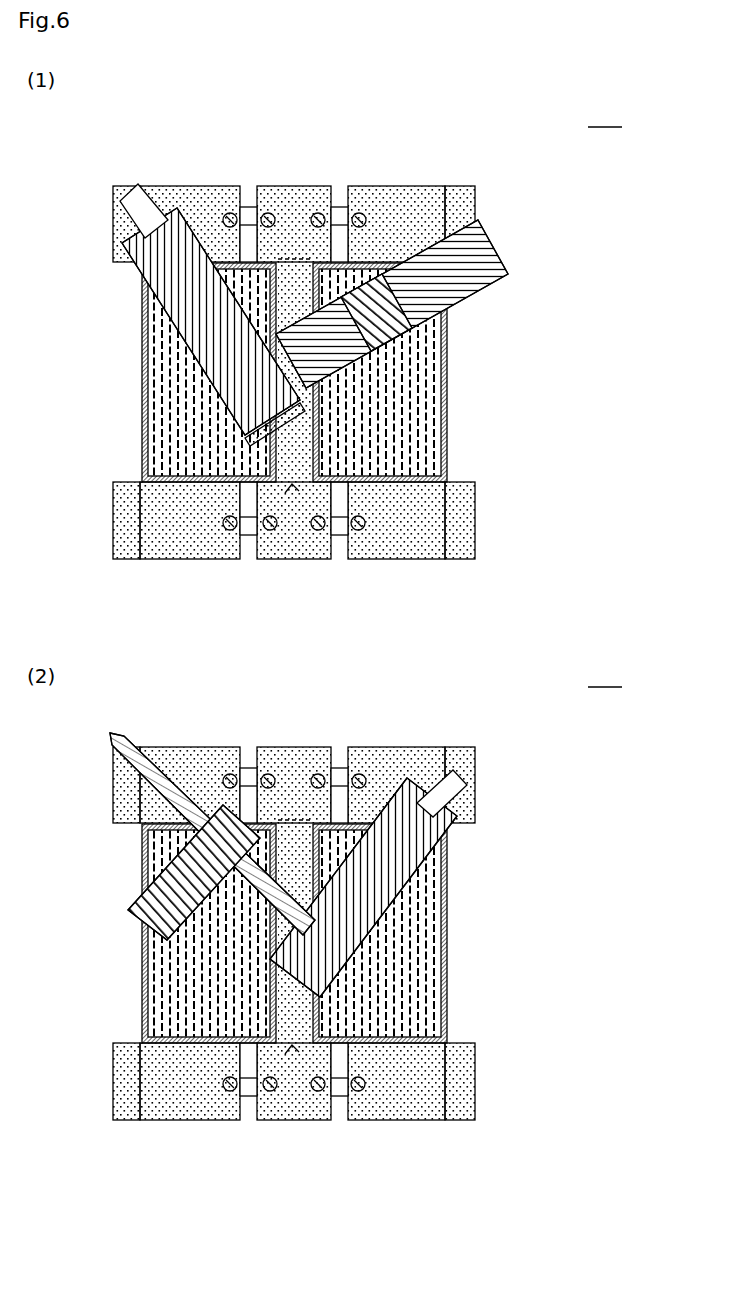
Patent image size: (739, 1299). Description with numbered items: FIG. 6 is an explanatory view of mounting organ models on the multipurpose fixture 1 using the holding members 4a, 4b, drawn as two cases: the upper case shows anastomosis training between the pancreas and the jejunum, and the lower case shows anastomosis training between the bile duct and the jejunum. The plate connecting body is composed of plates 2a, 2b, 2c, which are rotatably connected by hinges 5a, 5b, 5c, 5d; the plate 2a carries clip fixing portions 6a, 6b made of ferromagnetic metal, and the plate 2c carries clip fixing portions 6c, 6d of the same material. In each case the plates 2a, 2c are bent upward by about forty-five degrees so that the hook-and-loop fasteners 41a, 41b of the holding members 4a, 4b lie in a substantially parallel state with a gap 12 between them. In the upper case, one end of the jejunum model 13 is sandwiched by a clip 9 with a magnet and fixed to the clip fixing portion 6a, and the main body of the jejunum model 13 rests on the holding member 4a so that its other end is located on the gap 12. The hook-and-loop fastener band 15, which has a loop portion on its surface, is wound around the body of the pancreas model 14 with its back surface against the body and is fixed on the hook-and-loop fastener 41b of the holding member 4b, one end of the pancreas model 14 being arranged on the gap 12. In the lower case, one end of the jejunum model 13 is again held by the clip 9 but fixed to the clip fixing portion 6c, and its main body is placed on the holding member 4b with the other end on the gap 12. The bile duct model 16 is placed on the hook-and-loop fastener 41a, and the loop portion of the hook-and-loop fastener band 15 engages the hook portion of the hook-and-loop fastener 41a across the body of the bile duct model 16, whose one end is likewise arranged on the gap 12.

The multipurpose fixture 1 is at (553, 175).
The plate 2a is at (186, 209).
The plate 2b is at (284, 207).
The plate 2c is at (400, 210).
The holding member 4a is at (148, 440).
The holding member 4b is at (440, 453).
The hinge 5a is at (252, 207).
The hinge 5b is at (250, 535).
The hinge 5c is at (341, 207).
The hinge 5d is at (348, 537).
The clip fixing portion 6a is at (118, 233).
The clip fixing portion 6b is at (125, 503).
The clip fixing portion 6c is at (474, 205).
The clip fixing portion 6d is at (462, 502).
The clip with a magnet 9 is at (140, 188).
The gap 12 is at (292, 488).
The jejunum model 13 is at (195, 343).
The pancreas model 14 is at (472, 285).
The hook-and-loop fastener band 15 is at (413, 340).
The bile duct model 16 is at (122, 746).
The hook-and-loop fastener 41a is at (185, 411).
The hook-and-loop fastener 41b is at (387, 423).